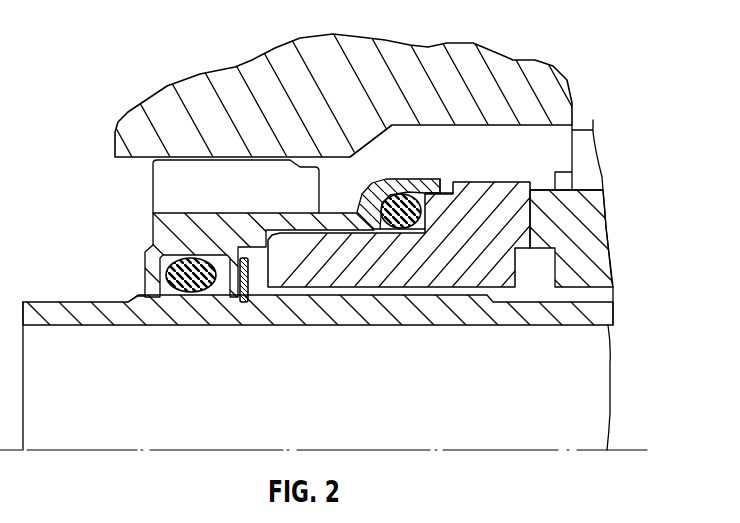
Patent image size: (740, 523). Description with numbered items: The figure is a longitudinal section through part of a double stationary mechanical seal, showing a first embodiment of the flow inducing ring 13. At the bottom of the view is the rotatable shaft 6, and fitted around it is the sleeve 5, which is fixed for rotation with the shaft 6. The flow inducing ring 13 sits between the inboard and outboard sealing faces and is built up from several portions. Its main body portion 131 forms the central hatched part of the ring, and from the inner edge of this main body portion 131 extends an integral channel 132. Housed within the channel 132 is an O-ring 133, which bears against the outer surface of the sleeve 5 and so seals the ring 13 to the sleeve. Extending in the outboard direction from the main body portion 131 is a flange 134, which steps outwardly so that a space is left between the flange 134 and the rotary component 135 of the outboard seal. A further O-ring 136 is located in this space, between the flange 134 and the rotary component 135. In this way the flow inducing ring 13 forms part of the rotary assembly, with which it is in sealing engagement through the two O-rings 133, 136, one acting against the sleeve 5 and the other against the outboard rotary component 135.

The sleeve 5 is at (445, 310).
The rotatable shaft 6 is at (582, 350).
The flow inducing ring 13 is at (170, 237).
The main body portion 131 is at (180, 222).
The channel 132 is at (164, 274).
The O-ring 133 is at (190, 280).
The flange 134 is at (403, 183).
The rotary component 135 is at (503, 196).
The further O-ring 136 is at (452, 193).